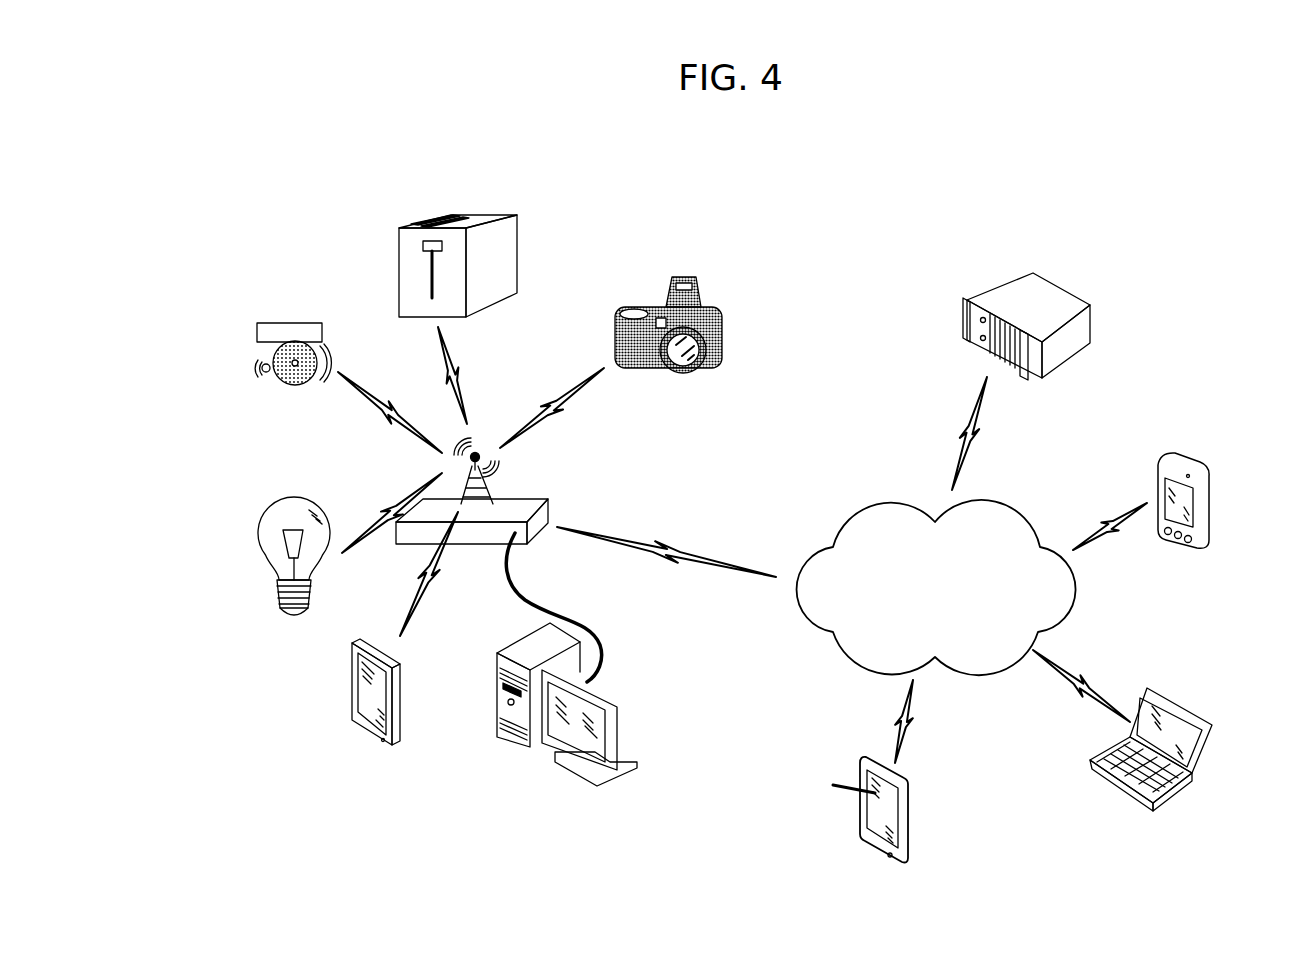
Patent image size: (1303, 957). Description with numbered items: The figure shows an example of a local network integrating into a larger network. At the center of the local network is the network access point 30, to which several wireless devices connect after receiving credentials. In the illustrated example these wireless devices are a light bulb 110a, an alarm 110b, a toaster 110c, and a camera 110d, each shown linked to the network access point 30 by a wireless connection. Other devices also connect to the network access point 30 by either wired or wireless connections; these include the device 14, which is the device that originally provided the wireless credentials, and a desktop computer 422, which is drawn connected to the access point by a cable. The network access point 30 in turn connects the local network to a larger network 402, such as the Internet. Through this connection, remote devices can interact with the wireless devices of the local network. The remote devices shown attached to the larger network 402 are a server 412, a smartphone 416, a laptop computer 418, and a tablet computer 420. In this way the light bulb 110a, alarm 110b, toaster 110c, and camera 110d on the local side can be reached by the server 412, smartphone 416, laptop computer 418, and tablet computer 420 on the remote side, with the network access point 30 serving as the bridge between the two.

The light bulb 110a is at (277, 597).
The alarm 110b is at (257, 343).
The toaster 110c is at (398, 247).
The camera 110d is at (722, 313).
The network access point 30 is at (523, 498).
The device 14 is at (352, 707).
The desktop computer 422 is at (615, 684).
The server 412 is at (1067, 290).
The smartphone 416 is at (1185, 458).
The network 402 is at (1005, 507).
The laptop computer 418 is at (1188, 707).
The tablet computer 420 is at (908, 850).